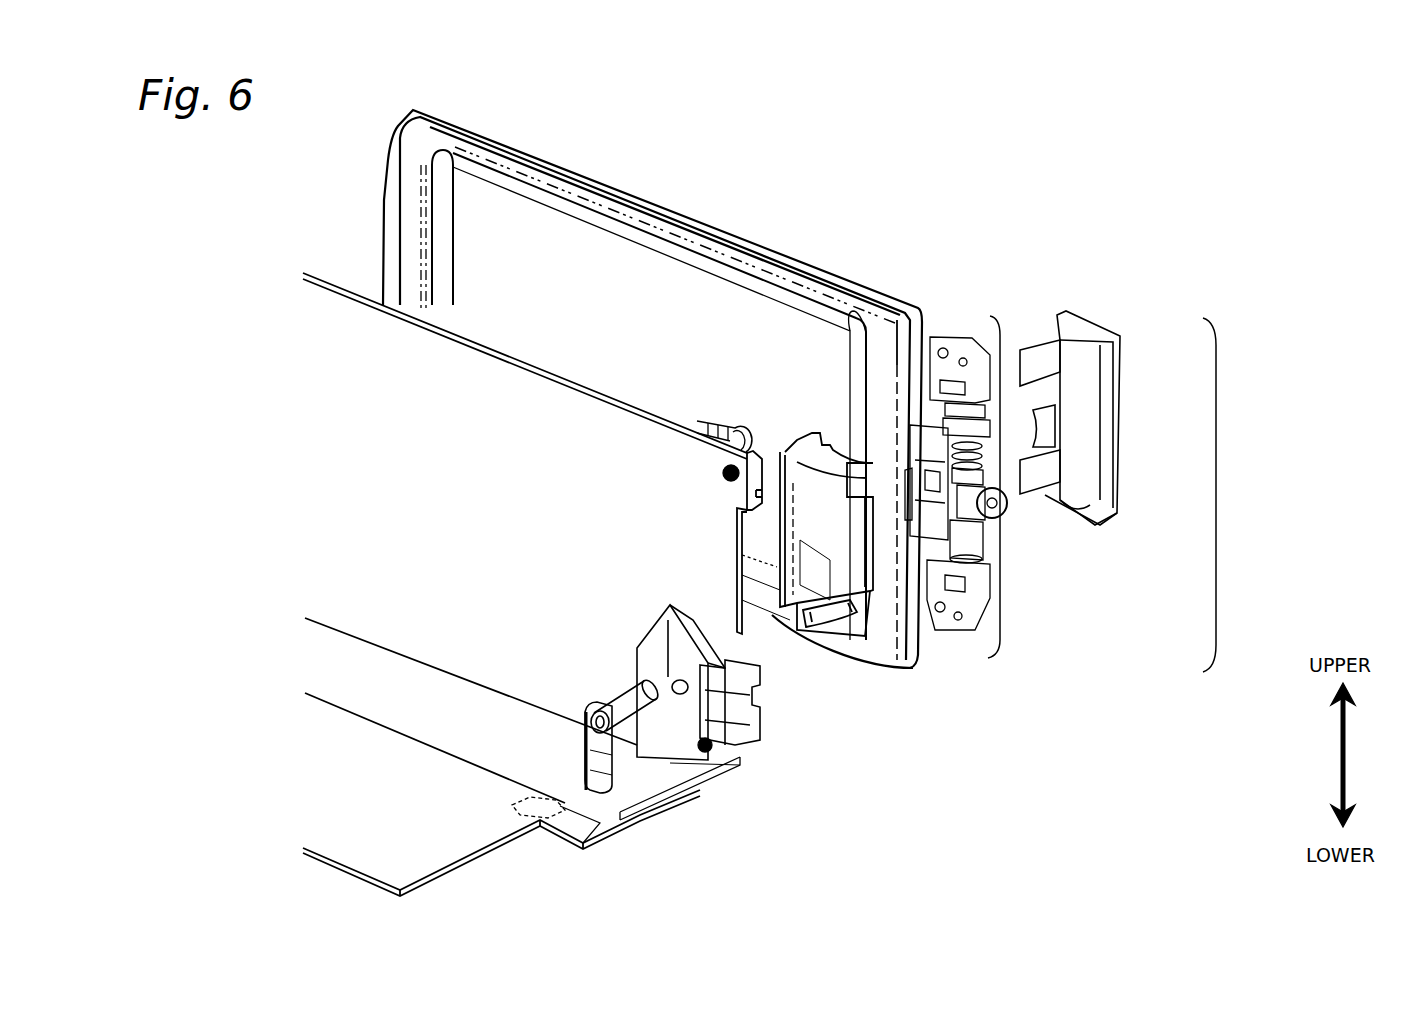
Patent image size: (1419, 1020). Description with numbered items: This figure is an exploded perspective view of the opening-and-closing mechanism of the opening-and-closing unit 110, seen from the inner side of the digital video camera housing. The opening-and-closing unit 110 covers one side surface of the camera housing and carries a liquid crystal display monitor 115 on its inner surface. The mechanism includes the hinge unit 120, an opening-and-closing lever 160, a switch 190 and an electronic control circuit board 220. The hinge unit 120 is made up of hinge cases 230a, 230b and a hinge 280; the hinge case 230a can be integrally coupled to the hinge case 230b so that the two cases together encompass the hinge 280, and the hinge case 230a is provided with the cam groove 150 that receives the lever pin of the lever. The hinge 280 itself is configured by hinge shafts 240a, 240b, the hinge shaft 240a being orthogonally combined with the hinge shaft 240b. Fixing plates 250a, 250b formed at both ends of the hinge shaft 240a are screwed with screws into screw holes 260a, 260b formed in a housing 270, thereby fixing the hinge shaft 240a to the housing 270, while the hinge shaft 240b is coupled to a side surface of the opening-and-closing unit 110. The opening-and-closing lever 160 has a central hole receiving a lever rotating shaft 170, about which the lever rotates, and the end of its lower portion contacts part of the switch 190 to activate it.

The opening-and-closing unit 110 is at (630, 183).
The liquid crystal display (LCD) monitor 115 is at (660, 275).
The hinge unit 120 is at (1217, 474).
The cam groove 150 is at (829, 640).
The opening-and-closing lever 160 is at (600, 775).
The lever rotating shaft 170 is at (637, 672).
The switch 190 is at (510, 800).
The electronic control circuit board 220 is at (383, 868).
The hinge case 230a is at (823, 543).
The hinge case 230b is at (1078, 362).
The hinge shaft 240a is at (975, 540).
The hinge shaft 240b is at (920, 470).
The fixing plate 250a is at (945, 627).
The fixing plate 250b is at (968, 340).
The screw hole 260a is at (717, 748).
The screw hole 260b is at (718, 474).
The housing 270 is at (332, 400).
The hinge 280 is at (1000, 610).